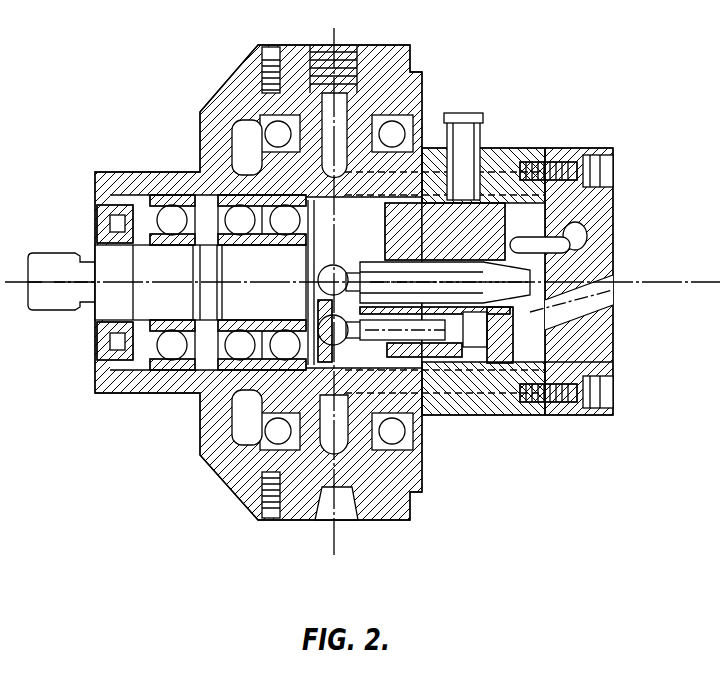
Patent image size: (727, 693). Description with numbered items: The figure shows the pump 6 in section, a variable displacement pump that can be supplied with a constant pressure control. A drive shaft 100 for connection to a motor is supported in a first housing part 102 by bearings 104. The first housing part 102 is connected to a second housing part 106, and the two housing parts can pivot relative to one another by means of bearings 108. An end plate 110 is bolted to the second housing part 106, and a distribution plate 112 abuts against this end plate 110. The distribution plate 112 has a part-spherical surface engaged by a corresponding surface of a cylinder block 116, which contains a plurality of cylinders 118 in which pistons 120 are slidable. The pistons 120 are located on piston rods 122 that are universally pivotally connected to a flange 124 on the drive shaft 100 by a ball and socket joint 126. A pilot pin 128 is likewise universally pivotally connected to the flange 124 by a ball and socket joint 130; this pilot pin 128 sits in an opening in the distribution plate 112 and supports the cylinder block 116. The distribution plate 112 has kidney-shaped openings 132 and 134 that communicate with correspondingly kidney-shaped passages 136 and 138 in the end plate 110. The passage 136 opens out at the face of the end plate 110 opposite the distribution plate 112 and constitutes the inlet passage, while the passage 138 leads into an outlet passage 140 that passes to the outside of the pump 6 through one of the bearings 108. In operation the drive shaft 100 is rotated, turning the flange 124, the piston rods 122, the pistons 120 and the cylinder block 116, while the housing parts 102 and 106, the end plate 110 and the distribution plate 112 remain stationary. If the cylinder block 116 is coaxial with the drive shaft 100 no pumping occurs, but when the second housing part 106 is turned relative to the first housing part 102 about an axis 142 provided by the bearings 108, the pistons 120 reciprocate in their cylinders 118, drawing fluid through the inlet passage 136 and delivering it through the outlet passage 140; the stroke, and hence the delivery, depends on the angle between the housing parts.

The pump 6 is at (125, 415).
The drive shaft 100 is at (52, 300).
The first housing part 102 is at (213, 118).
The bearings 104 is at (222, 195).
The second housing part 106 is at (520, 148).
The bearings 108 is at (428, 122).
The end plate 110 is at (603, 205).
The distribution plate 112 is at (593, 357).
The cylinder block 116 is at (500, 335).
The cylinders 118 is at (480, 345).
The pistons 120 is at (450, 360).
The piston rods 122 is at (357, 327).
The flange 124 is at (308, 242).
The ball and socket joint 126 is at (318, 322).
The pilot pin 128 is at (443, 273).
The ball and socket joint 130 is at (328, 282).
The kidney-shaped opening 132 is at (565, 303).
The kidney-shaped opening 134 is at (540, 253).
The inlet passage 136 is at (587, 320).
The passage 138 is at (575, 240).
The outlet passage 140 is at (612, 168).
The axis 142 is at (337, 538).